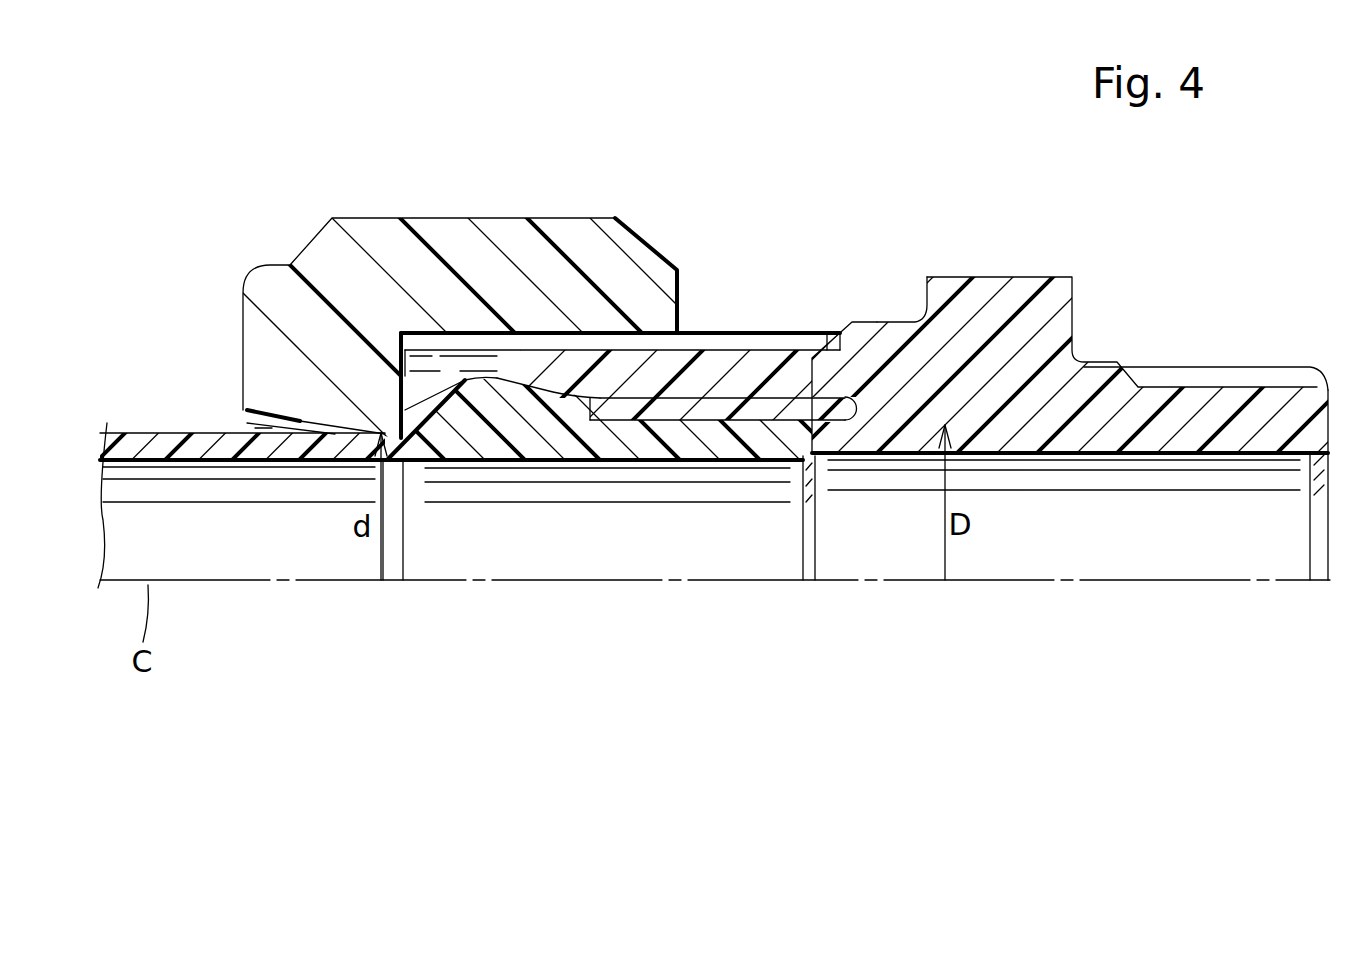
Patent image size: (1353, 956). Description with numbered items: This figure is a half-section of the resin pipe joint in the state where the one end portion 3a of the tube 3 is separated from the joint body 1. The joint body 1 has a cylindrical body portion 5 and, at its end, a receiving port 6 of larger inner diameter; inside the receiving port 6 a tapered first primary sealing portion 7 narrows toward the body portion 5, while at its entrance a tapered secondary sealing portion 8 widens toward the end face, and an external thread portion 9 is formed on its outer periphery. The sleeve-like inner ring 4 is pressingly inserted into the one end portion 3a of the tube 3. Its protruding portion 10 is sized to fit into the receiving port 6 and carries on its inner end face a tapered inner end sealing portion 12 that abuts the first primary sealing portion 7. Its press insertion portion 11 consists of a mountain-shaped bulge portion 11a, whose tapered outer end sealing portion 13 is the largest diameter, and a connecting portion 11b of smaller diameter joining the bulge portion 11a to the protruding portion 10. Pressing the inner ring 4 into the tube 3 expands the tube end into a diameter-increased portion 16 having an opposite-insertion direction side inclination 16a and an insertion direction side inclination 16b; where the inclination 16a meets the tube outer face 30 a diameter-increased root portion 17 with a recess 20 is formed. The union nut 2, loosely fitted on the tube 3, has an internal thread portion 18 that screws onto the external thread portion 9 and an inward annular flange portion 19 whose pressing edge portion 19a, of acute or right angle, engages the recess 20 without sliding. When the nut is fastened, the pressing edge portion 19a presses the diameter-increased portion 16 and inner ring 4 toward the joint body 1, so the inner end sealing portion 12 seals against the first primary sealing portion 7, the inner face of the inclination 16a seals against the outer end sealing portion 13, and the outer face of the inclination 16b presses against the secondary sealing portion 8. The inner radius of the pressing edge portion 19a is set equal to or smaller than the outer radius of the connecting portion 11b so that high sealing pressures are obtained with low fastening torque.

The joint body 1 is at (992, 272).
The union nut 2 is at (268, 262).
The tube 3 is at (128, 428).
The one end portion 3a is at (670, 455).
The inner ring 4 is at (693, 395).
The body portion 5 is at (915, 345).
The receiving port 6 is at (722, 360).
The first primary sealing portion 7 is at (845, 455).
The secondary sealing portion 8 is at (556, 420).
The external thread portion 9 is at (748, 340).
The protruding portion 10 is at (745, 450).
The press insertion portion 11 is at (517, 676).
The bulge portion 11a is at (505, 455).
The connecting portion 11b is at (613, 455).
The inner end sealing portion 12 is at (838, 450).
The outer end sealing portion 13 is at (468, 395).
The diameter-increased portion 16 is at (518, 400).
The opposite-insertion direction side inclination 16a is at (425, 360).
The insertion direction side inclination 16b is at (548, 390).
The diameter-increased root portion 17 is at (403, 442).
The internal thread portion 18 is at (457, 357).
The flange portion 19 is at (260, 370).
The pressing edge portion 19a is at (425, 440).
The recess 20 is at (395, 430).
The tube outer face 30 is at (167, 432).